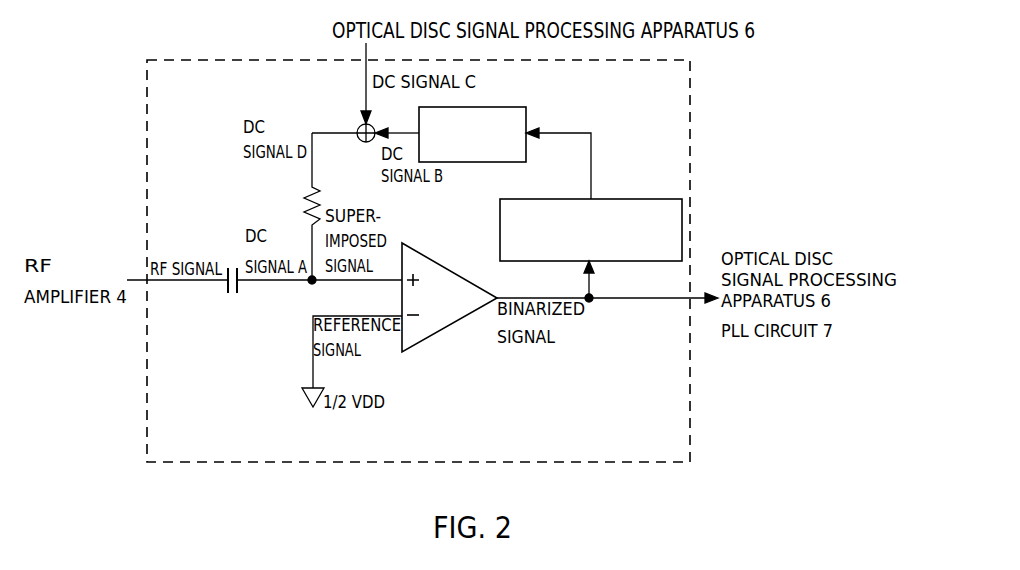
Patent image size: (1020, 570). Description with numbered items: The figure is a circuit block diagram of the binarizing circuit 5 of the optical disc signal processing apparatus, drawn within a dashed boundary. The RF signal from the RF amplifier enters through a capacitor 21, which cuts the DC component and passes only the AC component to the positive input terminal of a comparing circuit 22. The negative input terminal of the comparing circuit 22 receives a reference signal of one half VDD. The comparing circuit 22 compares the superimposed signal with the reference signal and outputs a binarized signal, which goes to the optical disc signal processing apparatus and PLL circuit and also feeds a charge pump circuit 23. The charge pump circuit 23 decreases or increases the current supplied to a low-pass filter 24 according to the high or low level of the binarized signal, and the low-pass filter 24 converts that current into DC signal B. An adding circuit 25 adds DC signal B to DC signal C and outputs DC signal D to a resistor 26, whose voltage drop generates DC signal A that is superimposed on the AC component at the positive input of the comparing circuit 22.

The binarizing circuit 5 is at (690, 136).
The capacitor 21 is at (229, 266).
The comparing circuit 22 is at (448, 328).
The charge pump circuit 23 is at (627, 199).
The low-pass filter 24 is at (528, 109).
The adding circuit 25 is at (360, 125).
The resistor 26 is at (322, 192).